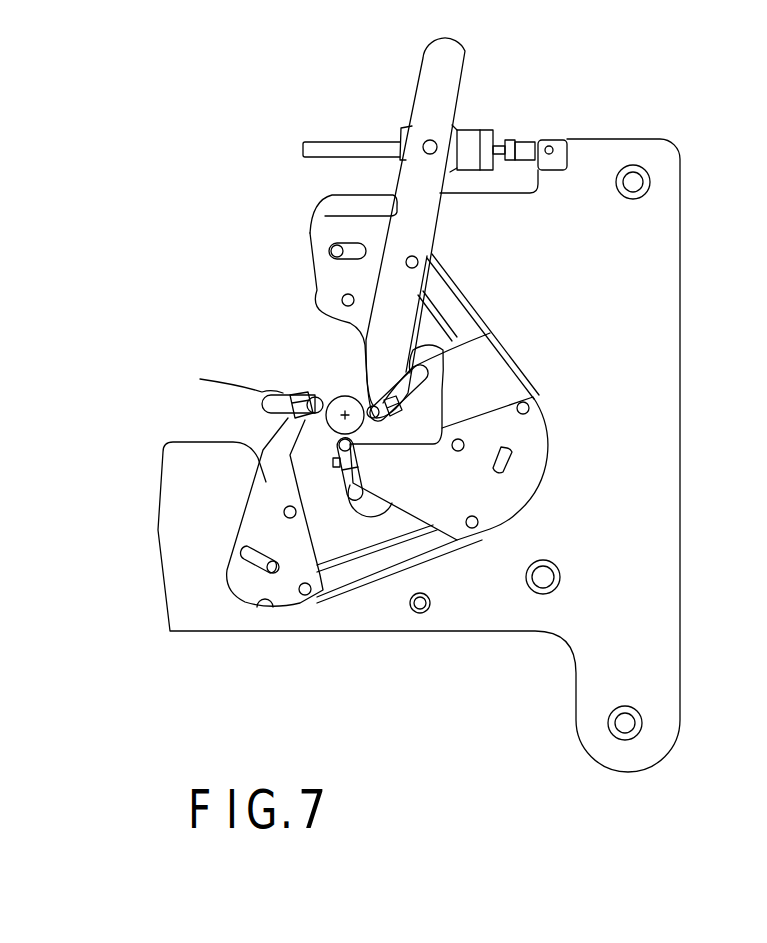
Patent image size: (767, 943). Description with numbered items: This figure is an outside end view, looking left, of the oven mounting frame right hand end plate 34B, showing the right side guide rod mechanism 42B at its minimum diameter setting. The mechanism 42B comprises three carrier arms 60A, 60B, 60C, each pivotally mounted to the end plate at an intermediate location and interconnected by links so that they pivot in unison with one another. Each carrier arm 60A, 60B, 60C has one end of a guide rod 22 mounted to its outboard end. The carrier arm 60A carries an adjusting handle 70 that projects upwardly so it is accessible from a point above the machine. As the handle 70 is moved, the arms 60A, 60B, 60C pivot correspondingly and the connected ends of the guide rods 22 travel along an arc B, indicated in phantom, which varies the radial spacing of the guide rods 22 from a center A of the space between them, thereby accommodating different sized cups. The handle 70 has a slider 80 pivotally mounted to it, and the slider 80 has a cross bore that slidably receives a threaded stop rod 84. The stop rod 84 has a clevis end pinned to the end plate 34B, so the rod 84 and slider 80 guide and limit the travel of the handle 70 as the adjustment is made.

The adjusting handle 70 is at (464, 52).
The slider 80 is at (407, 123).
The threaded stop rod 84 is at (321, 141).
The carrier arm 60A is at (310, 233).
The carrier arm 60B is at (547, 448).
The carrier arm 60C is at (245, 523).
The guide rod 22 is at (370, 410).
The end plate 34B is at (653, 368).
The right side guide rod mechanism 42B is at (163, 238).
The center A is at (342, 405).
The arc B is at (196, 379).